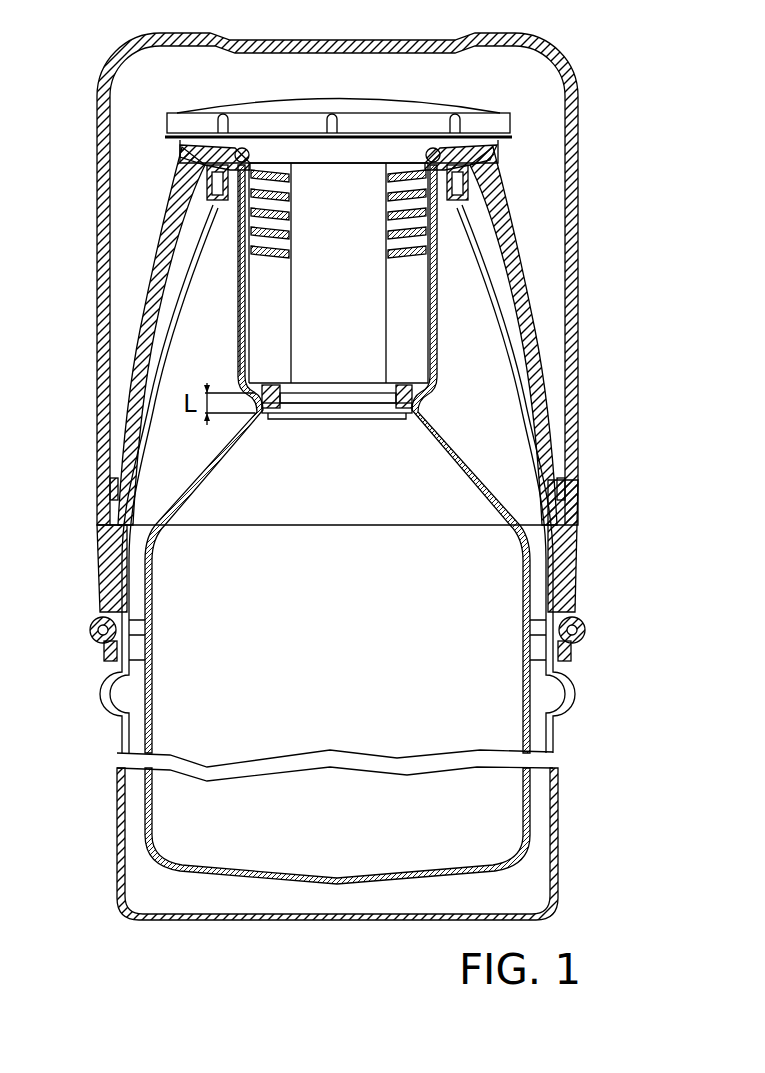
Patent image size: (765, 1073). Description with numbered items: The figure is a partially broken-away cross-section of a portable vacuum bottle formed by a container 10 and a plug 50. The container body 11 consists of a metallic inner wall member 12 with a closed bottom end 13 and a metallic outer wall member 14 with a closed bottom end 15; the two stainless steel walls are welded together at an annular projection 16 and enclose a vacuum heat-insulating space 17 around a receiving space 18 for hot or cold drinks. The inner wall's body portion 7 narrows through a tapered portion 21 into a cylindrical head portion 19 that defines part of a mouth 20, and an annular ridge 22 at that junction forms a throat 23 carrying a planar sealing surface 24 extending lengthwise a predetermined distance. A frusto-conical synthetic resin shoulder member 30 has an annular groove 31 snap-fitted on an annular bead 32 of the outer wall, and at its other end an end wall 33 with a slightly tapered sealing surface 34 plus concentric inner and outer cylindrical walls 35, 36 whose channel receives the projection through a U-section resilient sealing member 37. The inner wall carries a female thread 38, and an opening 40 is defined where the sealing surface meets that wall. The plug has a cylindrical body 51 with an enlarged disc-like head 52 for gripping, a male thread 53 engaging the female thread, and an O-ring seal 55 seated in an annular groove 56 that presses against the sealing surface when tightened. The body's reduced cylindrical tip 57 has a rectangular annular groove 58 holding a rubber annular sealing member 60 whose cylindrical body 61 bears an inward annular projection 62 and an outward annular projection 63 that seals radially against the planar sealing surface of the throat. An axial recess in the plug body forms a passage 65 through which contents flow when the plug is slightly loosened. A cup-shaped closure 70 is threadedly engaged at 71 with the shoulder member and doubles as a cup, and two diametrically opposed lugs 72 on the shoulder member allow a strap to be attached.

The body portion 7 is at (152, 636).
The container 10 is at (558, 858).
The container body 11 is at (561, 790).
The inner wall member 12 is at (524, 578).
The closed longitudinal one end 13 is at (336, 877).
The outer wall member 14 is at (541, 523).
The closed longitudinal one end 15 is at (437, 921).
The annular projection 16 is at (207, 177).
The vacuum heat-insulating space 17 is at (537, 794).
The receiving space 18 is at (311, 668).
The cylindrical head portion 19 is at (240, 330).
The mouth 20 is at (245, 292).
The tapered portion 21 is at (193, 485).
The annular ridge 22 is at (424, 416).
The throat 23 is at (259, 420).
The planar sealing surface 24 is at (415, 412).
The shoulder member 30 is at (518, 231).
The annular groove 31 is at (132, 636).
The annular bead 32 is at (100, 610).
The end wall 33 is at (200, 143).
The sealing surface 34 is at (236, 158).
The inner cylindrical wall 35 is at (265, 178).
The outer cylindrical wall 36 is at (210, 198).
The annular resilient sealing member 37 is at (488, 166).
The female thread 38 is at (407, 176).
The opening 40 is at (255, 160).
The plug 50 is at (482, 106).
The cylindrical body 51 is at (415, 325).
The enlarged disc-like head 52 is at (345, 100).
The male thread 53 is at (395, 235).
The O-ring seal 55 is at (430, 150).
The annular groove 56 is at (367, 152).
The cylindrical tip 57 is at (358, 414).
The annular groove 58 is at (300, 404).
The annular sealing member 60 is at (416, 389).
The cylindrical body 61 is at (430, 400).
The annular projection 62 is at (387, 393).
The annular projection 63 is at (265, 388).
The passage 65 is at (316, 313).
The cup-shaped closure 70 is at (562, 46).
The threaded engagement 71 is at (102, 482).
The lugs 72 is at (90, 623).